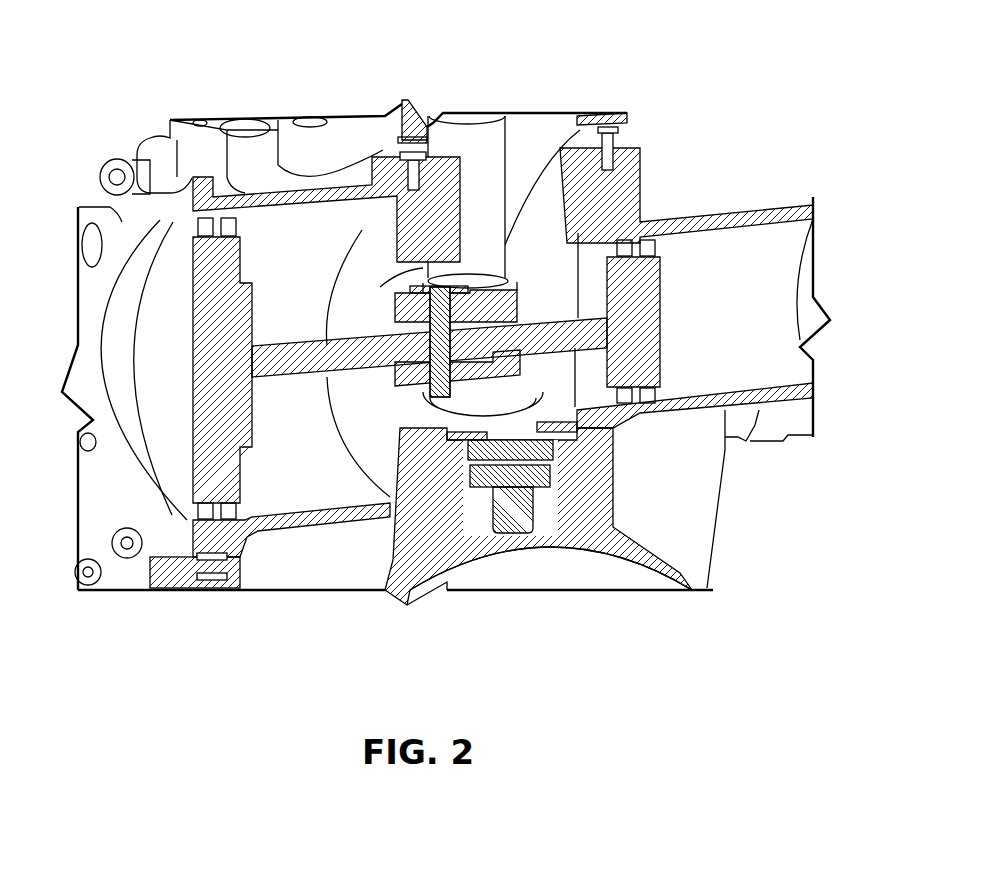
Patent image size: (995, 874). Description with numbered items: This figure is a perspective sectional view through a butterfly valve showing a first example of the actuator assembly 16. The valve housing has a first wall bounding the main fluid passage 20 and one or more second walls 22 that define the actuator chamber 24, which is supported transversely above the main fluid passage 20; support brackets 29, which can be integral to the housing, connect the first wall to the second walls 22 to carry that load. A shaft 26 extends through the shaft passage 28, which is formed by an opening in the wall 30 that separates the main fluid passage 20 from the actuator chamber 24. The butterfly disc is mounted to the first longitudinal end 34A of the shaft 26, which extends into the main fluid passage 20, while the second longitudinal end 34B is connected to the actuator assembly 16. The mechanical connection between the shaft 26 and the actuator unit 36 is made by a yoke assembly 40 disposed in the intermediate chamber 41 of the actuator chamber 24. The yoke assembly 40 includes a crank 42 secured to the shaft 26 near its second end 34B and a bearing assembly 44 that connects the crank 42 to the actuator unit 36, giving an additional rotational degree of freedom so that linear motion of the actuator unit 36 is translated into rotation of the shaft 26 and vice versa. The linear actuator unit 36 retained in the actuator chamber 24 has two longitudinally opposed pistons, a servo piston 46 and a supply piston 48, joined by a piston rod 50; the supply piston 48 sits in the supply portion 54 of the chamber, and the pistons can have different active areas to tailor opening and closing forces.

The actuator assembly 16 is at (735, 120).
The main fluid passage 20 is at (490, 572).
The second walls 22 is at (778, 207).
The actuator chamber 24 is at (740, 362).
The shaft 26 is at (508, 153).
The shaft passage 28 is at (543, 490).
The support brackets 29 is at (678, 500).
The wall 30 is at (450, 557).
The first longitudinal end 34A is at (510, 573).
The second longitudinal end 34B is at (482, 157).
The actuator unit 36 is at (818, 243).
The yoke assembly 40 is at (490, 277).
The intermediate chamber 41 is at (540, 233).
The crank 42 is at (575, 240).
The bearing assembly 44 is at (408, 603).
The servo piston 46 is at (230, 372).
The supply piston 48 is at (645, 333).
The piston rod 50 is at (340, 366).
The supply portion 54 is at (735, 329).